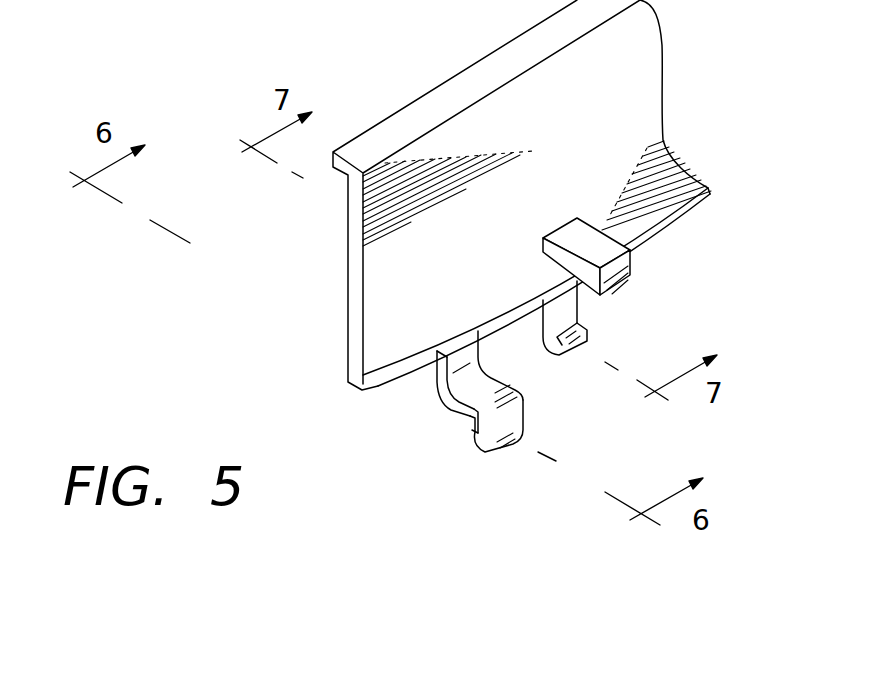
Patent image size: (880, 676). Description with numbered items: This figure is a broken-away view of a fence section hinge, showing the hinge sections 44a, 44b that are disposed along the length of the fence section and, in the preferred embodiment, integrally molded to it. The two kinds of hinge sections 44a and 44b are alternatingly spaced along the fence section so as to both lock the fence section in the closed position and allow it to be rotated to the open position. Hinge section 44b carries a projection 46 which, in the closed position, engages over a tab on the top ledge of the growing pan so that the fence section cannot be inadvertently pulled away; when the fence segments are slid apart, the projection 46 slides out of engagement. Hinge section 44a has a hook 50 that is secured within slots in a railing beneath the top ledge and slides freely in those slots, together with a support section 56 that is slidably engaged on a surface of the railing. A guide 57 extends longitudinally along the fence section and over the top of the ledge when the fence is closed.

The projection 46 is at (572, 232).
The guide 57 is at (663, 221).
The hinge section 44b is at (669, 275).
The hinge section 44a is at (448, 433).
The support section 56 is at (452, 410).
The hook 50 is at (473, 450).